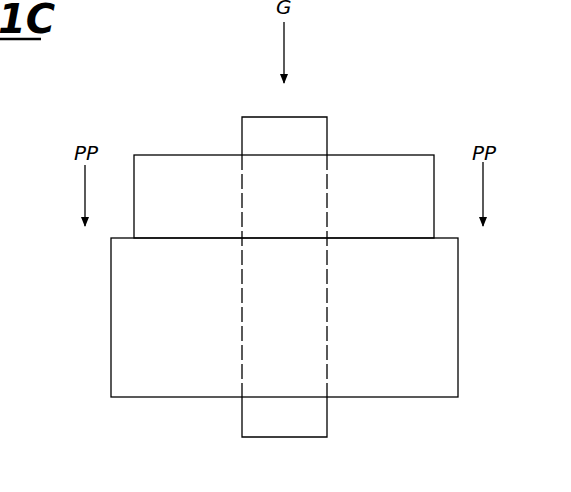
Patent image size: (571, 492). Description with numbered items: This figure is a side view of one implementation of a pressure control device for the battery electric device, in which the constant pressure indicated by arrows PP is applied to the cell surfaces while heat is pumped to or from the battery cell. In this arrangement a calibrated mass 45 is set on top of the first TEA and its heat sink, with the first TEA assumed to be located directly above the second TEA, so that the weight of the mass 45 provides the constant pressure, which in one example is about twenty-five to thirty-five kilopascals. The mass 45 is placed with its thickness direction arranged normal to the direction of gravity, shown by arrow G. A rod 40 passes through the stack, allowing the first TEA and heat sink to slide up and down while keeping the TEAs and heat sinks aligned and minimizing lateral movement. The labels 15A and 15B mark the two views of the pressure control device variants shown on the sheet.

The calibrated mass 45 is at (179, 174).
The rod 40 is at (327, 135).
The section line A 15A is at (0, 146).
The section line B 15B is at (413, 41).